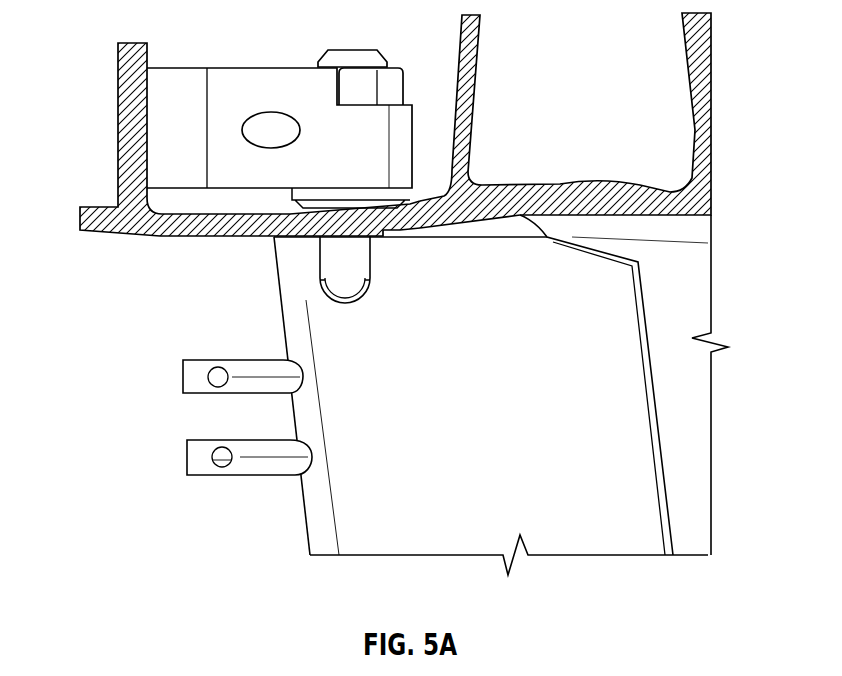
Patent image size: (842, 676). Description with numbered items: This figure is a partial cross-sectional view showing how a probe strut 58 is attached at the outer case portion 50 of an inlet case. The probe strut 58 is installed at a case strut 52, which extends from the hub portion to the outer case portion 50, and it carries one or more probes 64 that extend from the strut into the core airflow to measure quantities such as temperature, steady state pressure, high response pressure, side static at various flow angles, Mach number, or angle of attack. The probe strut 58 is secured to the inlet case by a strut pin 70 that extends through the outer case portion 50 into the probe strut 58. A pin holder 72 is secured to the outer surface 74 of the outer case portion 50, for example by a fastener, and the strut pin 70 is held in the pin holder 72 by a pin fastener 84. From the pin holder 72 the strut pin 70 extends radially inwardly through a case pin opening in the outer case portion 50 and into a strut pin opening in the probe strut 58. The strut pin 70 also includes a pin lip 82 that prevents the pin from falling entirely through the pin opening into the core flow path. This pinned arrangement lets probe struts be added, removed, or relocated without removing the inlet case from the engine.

The outer case portion 50 is at (554, 192).
The case strut 52 is at (692, 320).
The probe strut 58 is at (547, 540).
The probe 64 is at (187, 457).
The strut pin 70 is at (320, 235).
The pin holder 72 is at (272, 112).
The outer surface 74 is at (133, 138).
The pin lip 82 is at (335, 193).
The pin fastener 84 is at (386, 82).